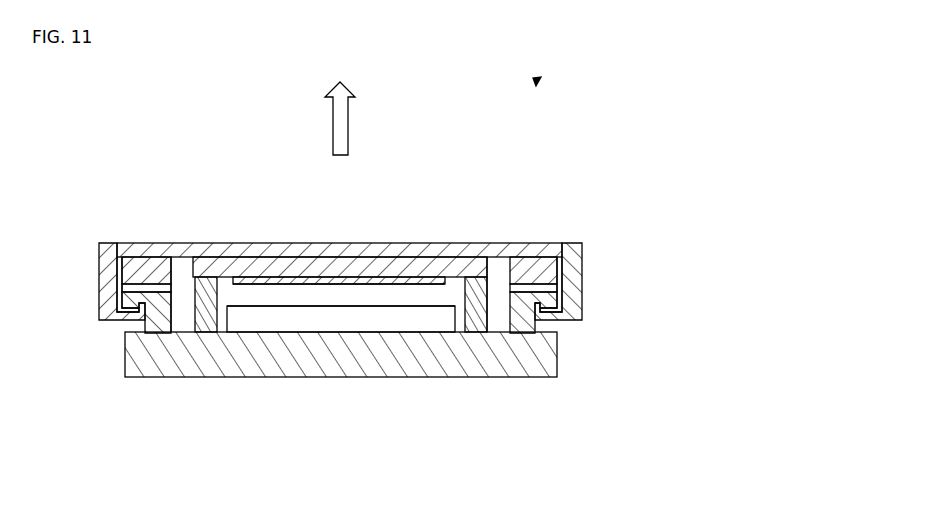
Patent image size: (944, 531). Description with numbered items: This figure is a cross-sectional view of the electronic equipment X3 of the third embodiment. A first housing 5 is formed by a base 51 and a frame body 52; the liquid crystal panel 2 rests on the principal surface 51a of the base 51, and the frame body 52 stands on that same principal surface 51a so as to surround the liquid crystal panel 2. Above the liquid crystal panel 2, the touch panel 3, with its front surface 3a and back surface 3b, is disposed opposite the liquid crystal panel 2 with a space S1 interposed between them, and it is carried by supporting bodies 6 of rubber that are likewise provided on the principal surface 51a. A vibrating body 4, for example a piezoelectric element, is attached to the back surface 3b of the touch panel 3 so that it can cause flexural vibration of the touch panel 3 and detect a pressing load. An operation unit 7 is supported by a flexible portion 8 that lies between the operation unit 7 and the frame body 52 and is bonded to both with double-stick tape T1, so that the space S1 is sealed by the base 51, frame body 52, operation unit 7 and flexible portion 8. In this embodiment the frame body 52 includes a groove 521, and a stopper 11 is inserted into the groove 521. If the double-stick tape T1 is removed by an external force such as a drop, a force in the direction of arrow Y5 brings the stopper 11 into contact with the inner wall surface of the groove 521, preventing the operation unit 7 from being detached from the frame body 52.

The liquid crystal panel 2 is at (335, 318).
The touch panel 3 is at (309, 264).
The front surface 3a is at (348, 280).
The back surface 3b is at (367, 288).
The vibrating body 4 is at (389, 302).
The first housing 5 is at (337, 393).
The base 51 is at (191, 356).
The principal surface 51a is at (205, 320).
The frame body 52 is at (127, 333).
The supporting body 6 is at (214, 250).
The operation unit 7 is at (254, 243).
The flexible portion 8 is at (158, 270).
The stopper 11 is at (112, 247).
The groove 521 is at (117, 310).
The space S1 is at (421, 290).
The double-stick tape T1 is at (136, 257).
The electronic equipment X3 is at (537, 84).
The arrow Y5 is at (336, 81).